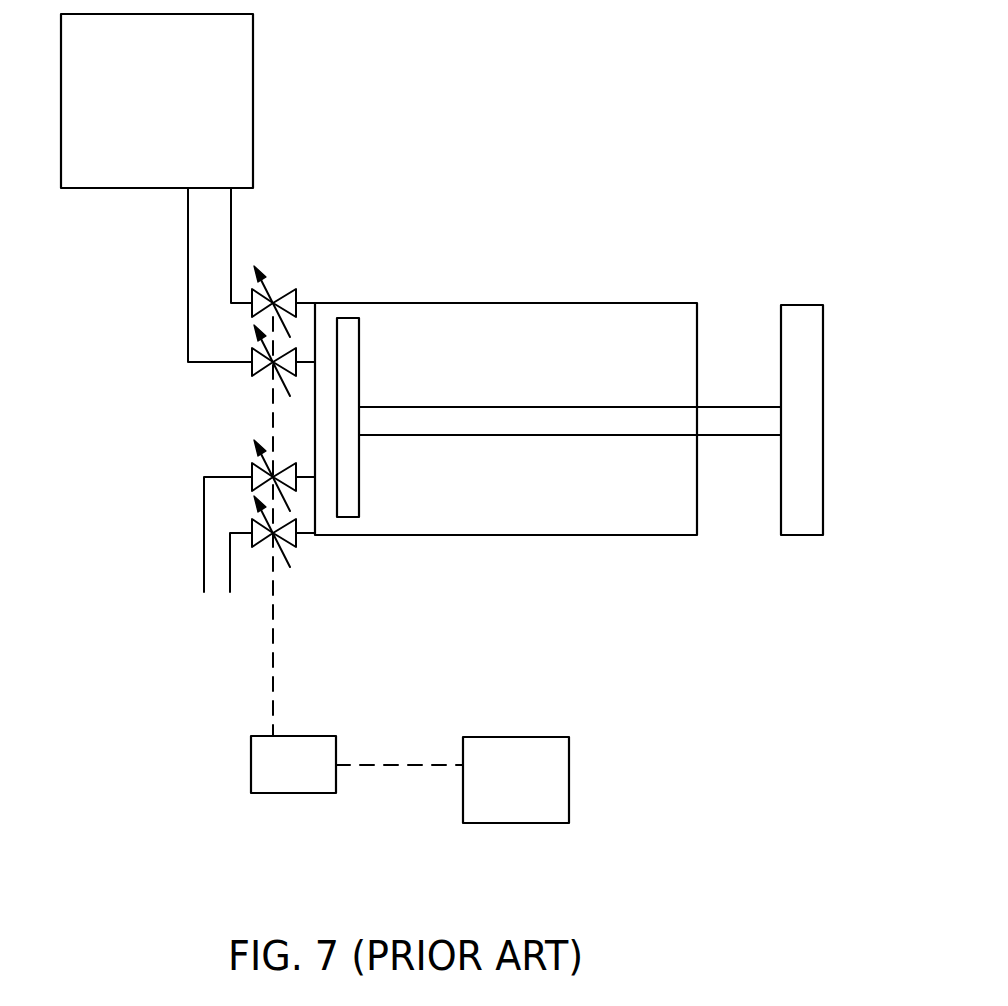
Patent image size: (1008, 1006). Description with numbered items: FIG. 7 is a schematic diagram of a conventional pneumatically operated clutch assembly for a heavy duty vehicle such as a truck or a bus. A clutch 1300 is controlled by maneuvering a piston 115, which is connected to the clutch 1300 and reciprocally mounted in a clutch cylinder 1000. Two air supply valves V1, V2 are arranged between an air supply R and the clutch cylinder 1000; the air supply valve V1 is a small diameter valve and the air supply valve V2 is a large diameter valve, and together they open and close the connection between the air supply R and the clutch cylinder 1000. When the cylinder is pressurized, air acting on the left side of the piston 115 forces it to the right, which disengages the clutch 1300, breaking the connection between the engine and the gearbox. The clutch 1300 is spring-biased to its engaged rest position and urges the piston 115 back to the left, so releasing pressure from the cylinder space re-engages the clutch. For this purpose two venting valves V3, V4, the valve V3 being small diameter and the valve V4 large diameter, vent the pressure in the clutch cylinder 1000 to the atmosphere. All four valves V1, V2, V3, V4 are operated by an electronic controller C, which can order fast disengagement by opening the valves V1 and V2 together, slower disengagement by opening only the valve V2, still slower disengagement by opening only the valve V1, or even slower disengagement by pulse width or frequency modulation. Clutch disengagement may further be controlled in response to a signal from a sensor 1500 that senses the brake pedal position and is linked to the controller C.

The air supply R is at (253, 42).
The air supply valve V1 is at (283, 285).
The air supply valve V2 is at (250, 370).
The venting valve V3 is at (215, 470).
The venting valve V4 is at (295, 540).
The clutch cylinder 1000 is at (421, 303).
The piston 115 is at (359, 477).
The clutch 1300 is at (781, 305).
The sensor 1500 is at (569, 782).
The electronic controller C is at (293, 793).